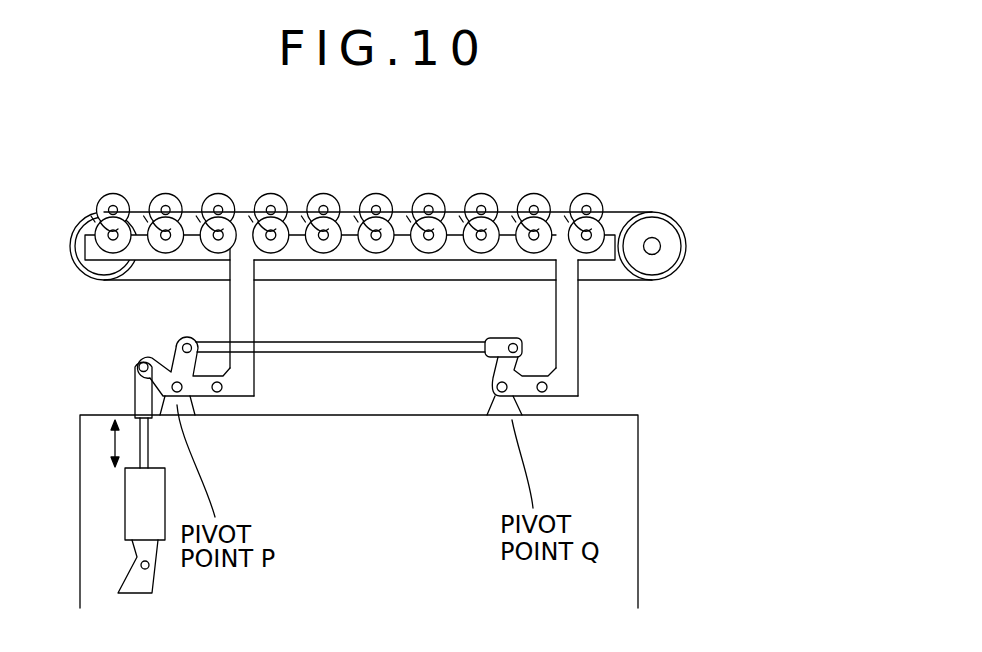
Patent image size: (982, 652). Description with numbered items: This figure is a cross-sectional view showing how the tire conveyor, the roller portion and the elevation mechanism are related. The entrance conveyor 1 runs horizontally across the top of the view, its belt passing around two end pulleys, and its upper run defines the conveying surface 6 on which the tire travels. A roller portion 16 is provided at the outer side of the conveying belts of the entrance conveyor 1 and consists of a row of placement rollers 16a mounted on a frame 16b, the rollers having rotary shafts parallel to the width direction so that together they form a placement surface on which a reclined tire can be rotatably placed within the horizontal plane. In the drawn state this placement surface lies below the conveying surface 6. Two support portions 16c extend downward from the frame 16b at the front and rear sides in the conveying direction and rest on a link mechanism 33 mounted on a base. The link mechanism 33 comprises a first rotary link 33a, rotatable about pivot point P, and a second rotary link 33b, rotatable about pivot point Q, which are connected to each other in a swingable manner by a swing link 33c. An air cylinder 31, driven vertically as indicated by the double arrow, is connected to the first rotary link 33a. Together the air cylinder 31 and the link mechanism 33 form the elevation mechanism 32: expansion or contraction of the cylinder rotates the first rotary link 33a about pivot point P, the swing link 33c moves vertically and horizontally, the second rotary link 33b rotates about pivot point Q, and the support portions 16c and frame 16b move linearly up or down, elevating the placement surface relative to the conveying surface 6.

The entrance conveyor 1 is at (140, 210).
The conveying surface 6 is at (248, 210).
The roller portion 16 is at (382, 251).
The placement roller 16a is at (296, 210).
The frame 16b is at (604, 254).
The support portion 16c is at (245, 302).
The air cylinder 31 is at (130, 504).
The elevation mechanism 32 is at (372, 573).
The link mechanism 33 is at (357, 426).
The first rotary link 33a is at (200, 390).
The second rotary link 33b is at (503, 365).
The swing link 33c is at (497, 468).